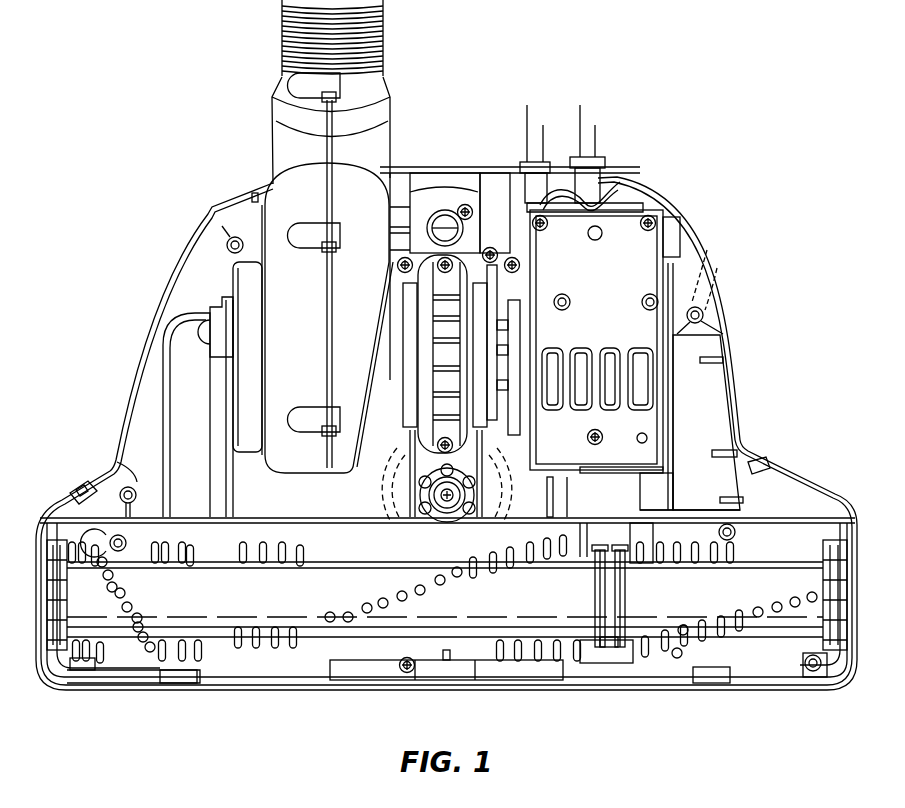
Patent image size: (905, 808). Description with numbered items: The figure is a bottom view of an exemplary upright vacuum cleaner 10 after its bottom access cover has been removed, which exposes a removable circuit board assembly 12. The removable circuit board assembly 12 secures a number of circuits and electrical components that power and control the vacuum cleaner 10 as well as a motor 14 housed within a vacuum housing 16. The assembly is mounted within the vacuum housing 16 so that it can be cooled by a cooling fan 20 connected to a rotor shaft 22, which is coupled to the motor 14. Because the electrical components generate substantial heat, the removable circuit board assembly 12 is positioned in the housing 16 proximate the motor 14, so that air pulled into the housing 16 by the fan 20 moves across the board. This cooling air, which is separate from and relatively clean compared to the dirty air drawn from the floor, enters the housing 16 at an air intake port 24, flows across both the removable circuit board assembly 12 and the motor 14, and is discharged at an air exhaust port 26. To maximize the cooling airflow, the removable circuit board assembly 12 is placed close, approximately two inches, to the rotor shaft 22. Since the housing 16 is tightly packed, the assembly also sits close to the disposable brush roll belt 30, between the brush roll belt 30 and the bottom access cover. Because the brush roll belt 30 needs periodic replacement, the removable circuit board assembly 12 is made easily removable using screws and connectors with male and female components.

The upright vacuum cleaner 10 is at (246, 134).
The removable circuit board assembly 12 is at (613, 228).
The motor 14 is at (413, 303).
The vacuum housing 16 is at (740, 398).
The cooling fan 20 is at (393, 320).
The rotor shaft 22 is at (522, 352).
The air intake port 24 is at (715, 278).
The air exhaust port 26 is at (130, 392).
The brush roll belt 30 is at (608, 647).